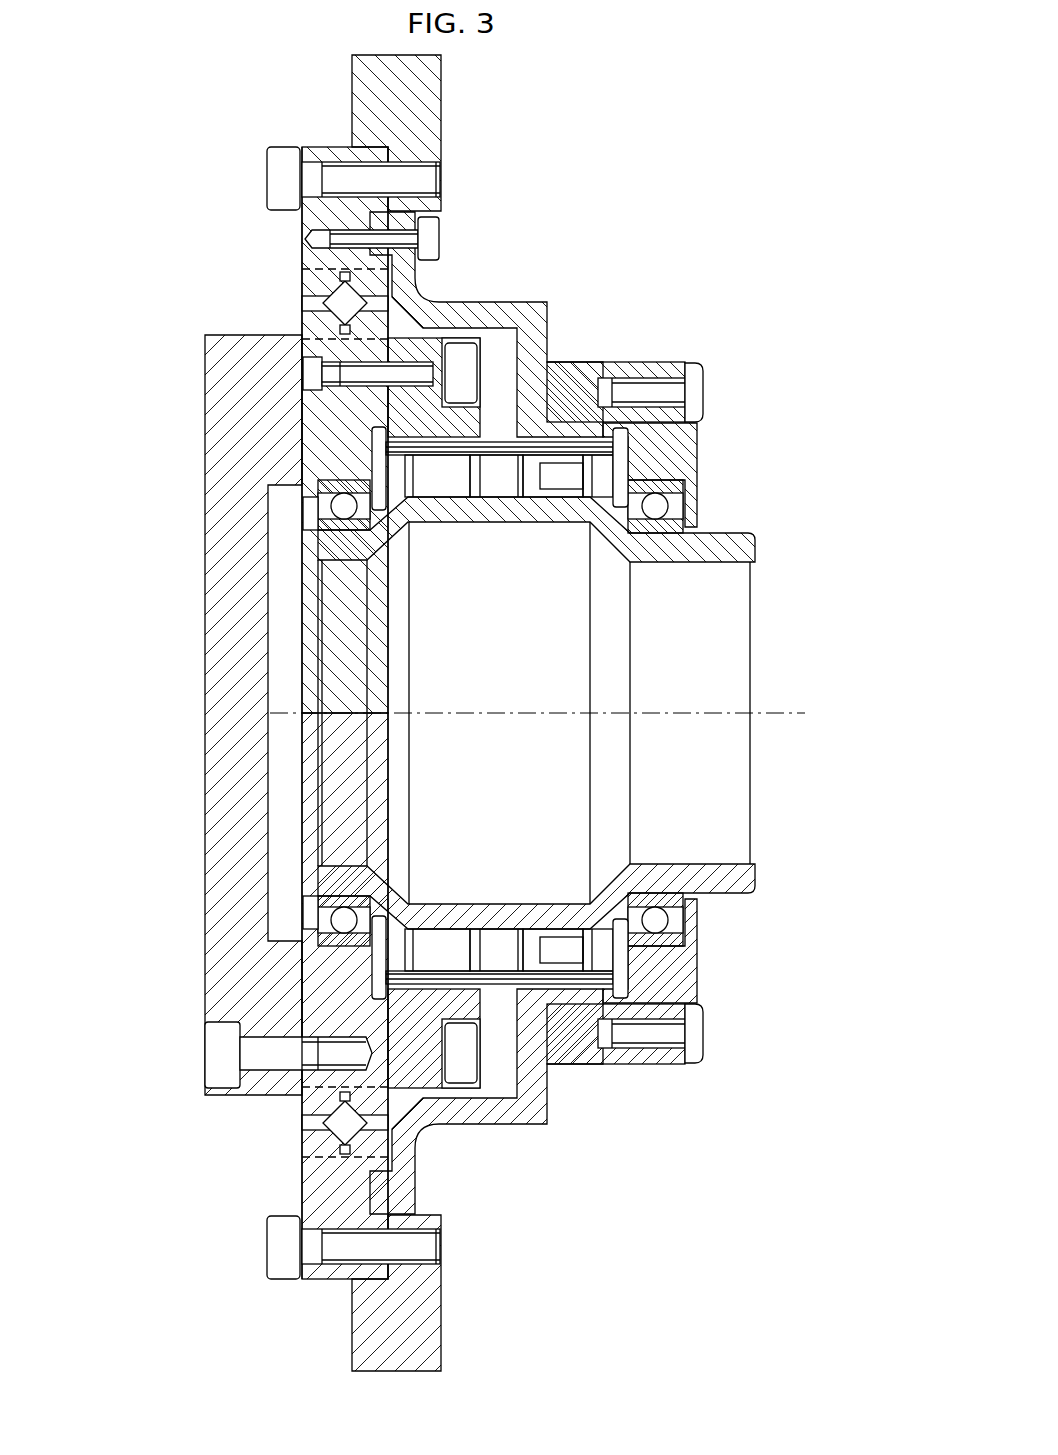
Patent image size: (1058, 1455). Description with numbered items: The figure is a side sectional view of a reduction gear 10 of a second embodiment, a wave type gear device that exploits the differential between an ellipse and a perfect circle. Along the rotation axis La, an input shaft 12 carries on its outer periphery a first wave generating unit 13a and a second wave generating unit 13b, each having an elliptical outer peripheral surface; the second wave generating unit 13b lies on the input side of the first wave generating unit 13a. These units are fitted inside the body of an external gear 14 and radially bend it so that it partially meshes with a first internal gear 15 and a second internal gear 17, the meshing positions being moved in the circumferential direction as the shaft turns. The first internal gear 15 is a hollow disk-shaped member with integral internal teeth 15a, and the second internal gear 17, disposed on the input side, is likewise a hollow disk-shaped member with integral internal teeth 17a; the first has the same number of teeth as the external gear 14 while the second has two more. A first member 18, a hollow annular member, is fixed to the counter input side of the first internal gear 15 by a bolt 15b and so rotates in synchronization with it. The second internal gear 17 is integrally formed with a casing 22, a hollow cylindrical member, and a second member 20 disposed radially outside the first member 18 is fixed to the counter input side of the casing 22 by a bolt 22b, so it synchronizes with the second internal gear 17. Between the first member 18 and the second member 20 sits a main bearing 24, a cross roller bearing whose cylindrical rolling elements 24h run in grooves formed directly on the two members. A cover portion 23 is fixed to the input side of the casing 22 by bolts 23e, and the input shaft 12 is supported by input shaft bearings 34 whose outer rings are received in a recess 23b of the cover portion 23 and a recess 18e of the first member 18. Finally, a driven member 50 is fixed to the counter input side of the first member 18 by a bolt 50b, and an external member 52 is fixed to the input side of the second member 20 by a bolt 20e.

The reduction gear 10 is at (627, 235).
The input shaft 12 is at (740, 550).
The first wave generating unit 13a is at (423, 482).
The second wave generating unit 13b is at (570, 482).
The external gear 14 is at (543, 430).
The first internal gear 15 is at (467, 360).
The internal teeth 15a is at (472, 482).
The bolt 15b is at (492, 447).
The second internal gear 17 is at (567, 447).
The internal teeth 17a is at (528, 482).
The first member 18 is at (320, 420).
The recess 18e is at (345, 470).
The second member 20 is at (335, 268).
The bolt 20e is at (270, 168).
The casing 22 is at (612, 363).
The bolt 22b is at (447, 238).
The cover portion 23 is at (690, 452).
The recess 23b is at (657, 490).
The bolts 23e is at (705, 380).
The main bearing 24 is at (276, 693).
The rolling elements 24h is at (322, 298).
The input shaft bearing 34 is at (655, 512).
The driven member 50 is at (235, 435).
The bolt 50b is at (222, 1055).
The external member 52 is at (432, 98).
The rotation axis La is at (770, 700).